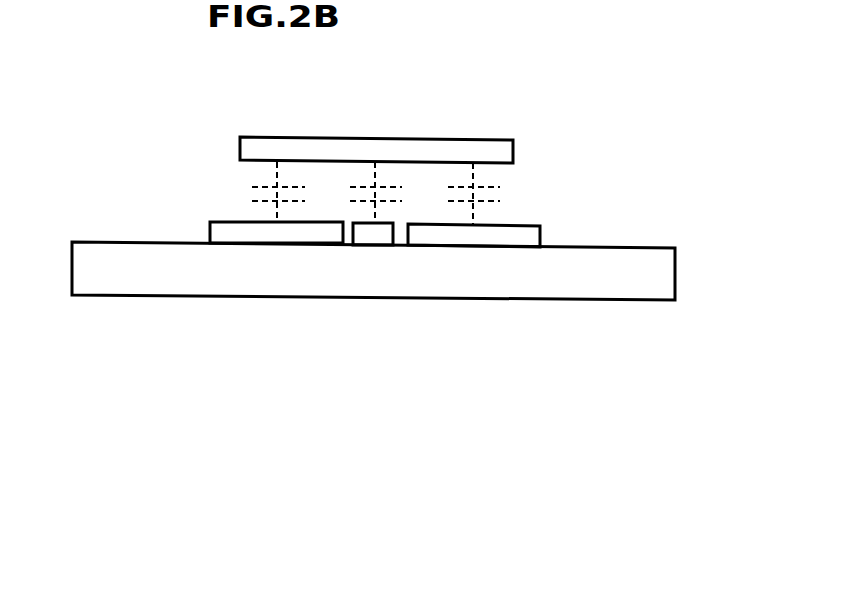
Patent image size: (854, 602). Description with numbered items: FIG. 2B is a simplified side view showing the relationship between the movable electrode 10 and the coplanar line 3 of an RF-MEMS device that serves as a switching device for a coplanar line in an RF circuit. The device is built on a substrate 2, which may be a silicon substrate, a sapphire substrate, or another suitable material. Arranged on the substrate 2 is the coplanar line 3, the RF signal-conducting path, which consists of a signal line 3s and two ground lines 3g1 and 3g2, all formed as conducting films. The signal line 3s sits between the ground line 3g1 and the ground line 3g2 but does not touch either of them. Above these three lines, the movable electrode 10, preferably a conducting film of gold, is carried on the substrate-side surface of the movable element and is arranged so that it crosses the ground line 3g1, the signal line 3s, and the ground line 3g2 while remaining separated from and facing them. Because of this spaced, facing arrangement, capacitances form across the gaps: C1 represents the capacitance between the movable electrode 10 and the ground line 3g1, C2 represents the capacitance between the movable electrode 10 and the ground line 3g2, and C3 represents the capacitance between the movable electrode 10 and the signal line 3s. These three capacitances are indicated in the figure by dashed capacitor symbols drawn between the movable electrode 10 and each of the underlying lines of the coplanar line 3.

The substrate 2 is at (675, 272).
The movable electrode 10 is at (482, 152).
The coplanar line 3 is at (375, 342).
The ground line 3g1 is at (258, 236).
The signal line 3s is at (379, 237).
The ground line 3g2 is at (474, 302).
The capacitance C1 is at (248, 193).
The capacitance C2 is at (502, 197).
The capacitance C3 is at (363, 190).